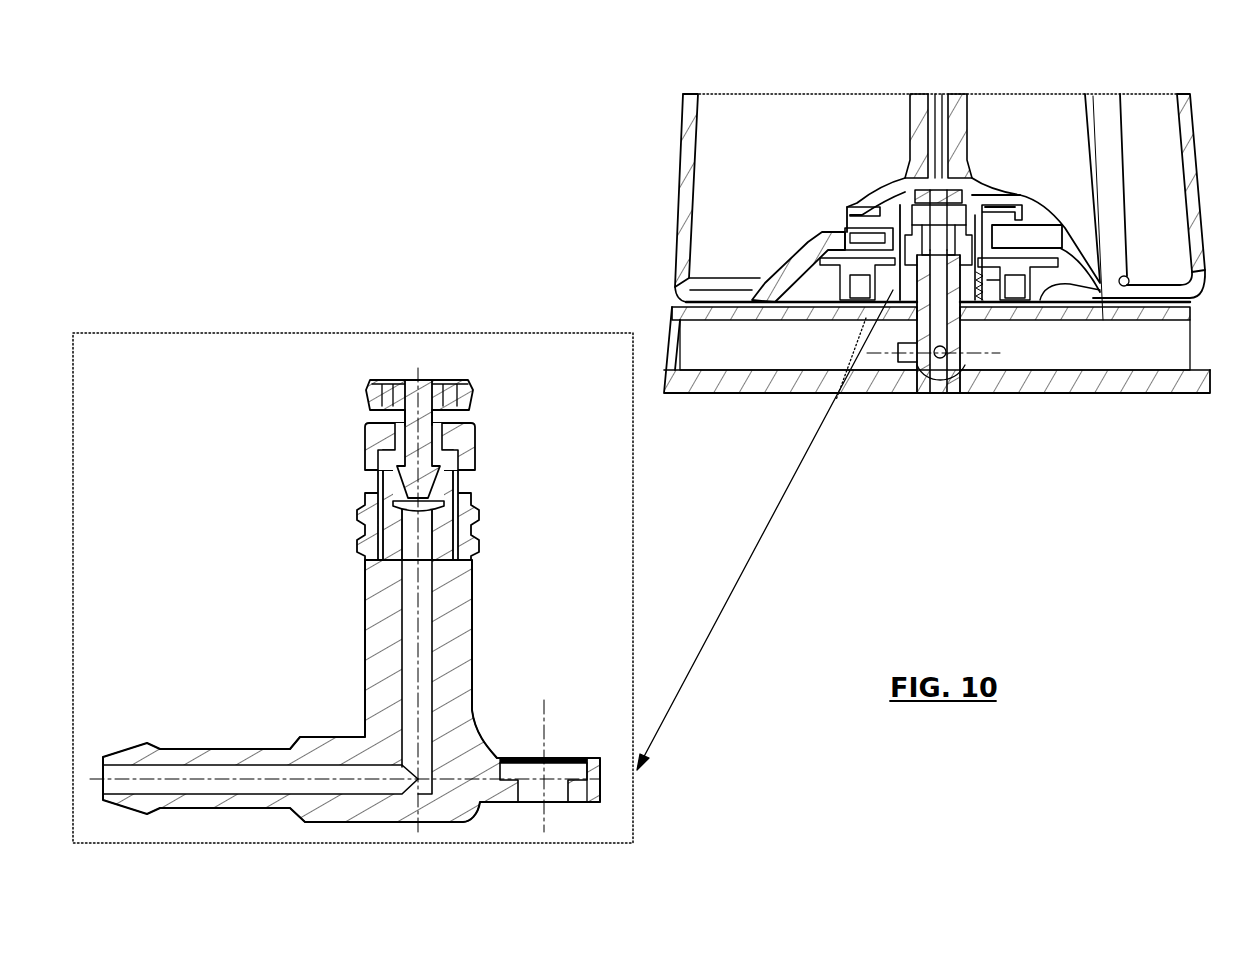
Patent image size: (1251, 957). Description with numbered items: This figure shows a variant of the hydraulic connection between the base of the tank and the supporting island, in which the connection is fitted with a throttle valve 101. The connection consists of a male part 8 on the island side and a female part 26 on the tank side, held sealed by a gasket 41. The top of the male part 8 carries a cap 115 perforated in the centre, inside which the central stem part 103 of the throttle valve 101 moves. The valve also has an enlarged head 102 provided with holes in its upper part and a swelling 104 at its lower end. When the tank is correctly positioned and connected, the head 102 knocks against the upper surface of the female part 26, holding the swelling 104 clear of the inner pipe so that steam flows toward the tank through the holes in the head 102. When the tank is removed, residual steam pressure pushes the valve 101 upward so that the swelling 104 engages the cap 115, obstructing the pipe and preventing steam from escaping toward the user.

The male part 8 is at (370, 624).
The female part 26 is at (967, 173).
The gasket 41 is at (475, 523).
The throttle valve 101 is at (352, 360).
The enlarged head 102 is at (427, 490).
The central stem part 103 is at (437, 413).
The swelling 104 is at (445, 467).
The cap 115 is at (378, 443).